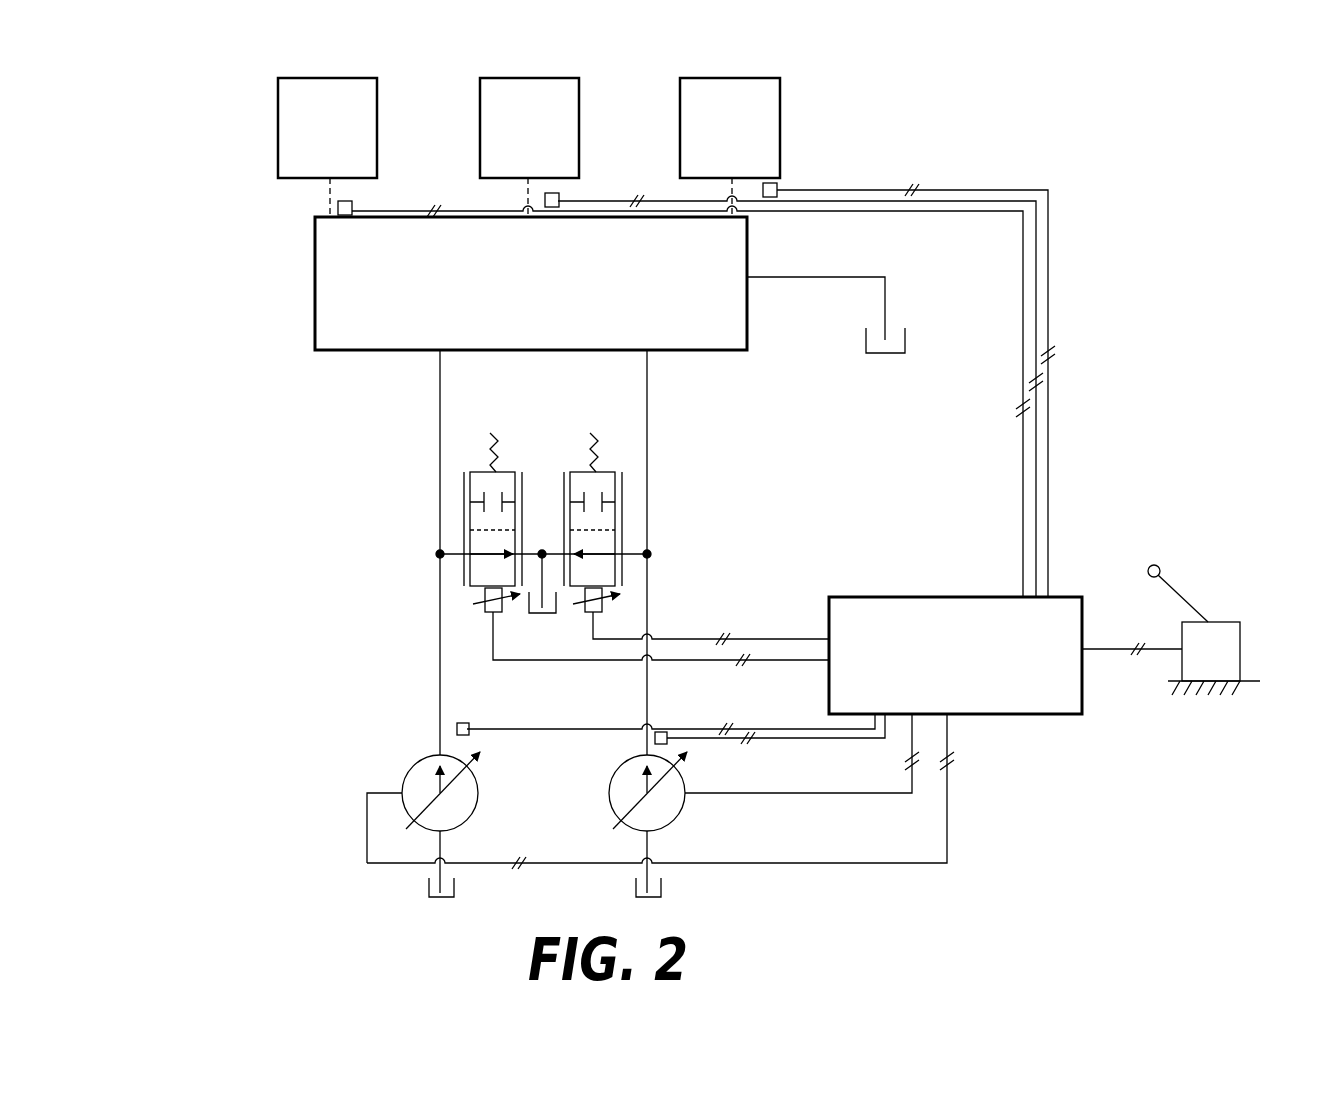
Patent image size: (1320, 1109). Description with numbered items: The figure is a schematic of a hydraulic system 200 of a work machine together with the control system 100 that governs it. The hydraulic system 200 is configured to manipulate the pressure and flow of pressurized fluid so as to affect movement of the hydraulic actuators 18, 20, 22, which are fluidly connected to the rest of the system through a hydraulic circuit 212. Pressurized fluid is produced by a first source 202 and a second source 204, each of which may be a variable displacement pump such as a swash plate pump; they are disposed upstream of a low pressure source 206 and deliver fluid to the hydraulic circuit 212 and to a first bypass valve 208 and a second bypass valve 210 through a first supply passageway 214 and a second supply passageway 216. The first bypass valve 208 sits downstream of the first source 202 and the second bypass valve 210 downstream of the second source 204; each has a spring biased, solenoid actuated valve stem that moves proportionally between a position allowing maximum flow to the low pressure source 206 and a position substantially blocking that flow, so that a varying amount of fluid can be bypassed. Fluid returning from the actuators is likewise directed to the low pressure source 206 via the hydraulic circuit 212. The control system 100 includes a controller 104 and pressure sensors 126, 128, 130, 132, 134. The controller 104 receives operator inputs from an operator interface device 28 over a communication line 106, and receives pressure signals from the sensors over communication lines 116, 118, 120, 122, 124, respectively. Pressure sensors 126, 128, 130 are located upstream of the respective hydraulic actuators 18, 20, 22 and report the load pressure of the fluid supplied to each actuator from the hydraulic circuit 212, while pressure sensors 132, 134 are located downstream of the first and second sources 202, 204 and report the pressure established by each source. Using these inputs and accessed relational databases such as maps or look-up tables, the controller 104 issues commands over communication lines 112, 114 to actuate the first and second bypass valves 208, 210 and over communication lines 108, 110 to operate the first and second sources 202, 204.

The hydraulic actuator 18 is at (327, 147).
The hydraulic actuator 20 is at (529, 147).
The hydraulic actuator 22 is at (730, 147).
The operator interface device 28 is at (1228, 622).
The control system 100 is at (1113, 507).
The controller 104 is at (955, 655).
The communication line 106 is at (1108, 649).
The communication line 108 is at (810, 865).
The communication line 110 is at (790, 795).
The communication line 112 is at (790, 660).
The communication line 114 is at (765, 639).
The communication line 116 is at (1023, 268).
The communication line 118 is at (1036, 311).
The communication line 120 is at (1048, 398).
The communication line 122 is at (773, 729).
The communication line 124 is at (785, 738).
The pressure sensor 126 is at (352, 204).
The pressure sensor 128 is at (558, 196).
The pressure sensor 130 is at (777, 186).
The pressure sensor 132 is at (466, 723).
The pressure sensor 134 is at (664, 732).
The hydraulic system 200 is at (238, 543).
The first source of pressurized fluid 202 is at (415, 764).
The second source of pressurized fluid 204 is at (612, 788).
The low pressure source 206 is at (905, 333).
The first bypass valve 208 is at (470, 512).
The second bypass valve 210 is at (615, 508).
The hydraulic circuit 212 is at (531, 283).
The first supply passageway 214 is at (439, 446).
The second supply passageway 216 is at (647, 448).